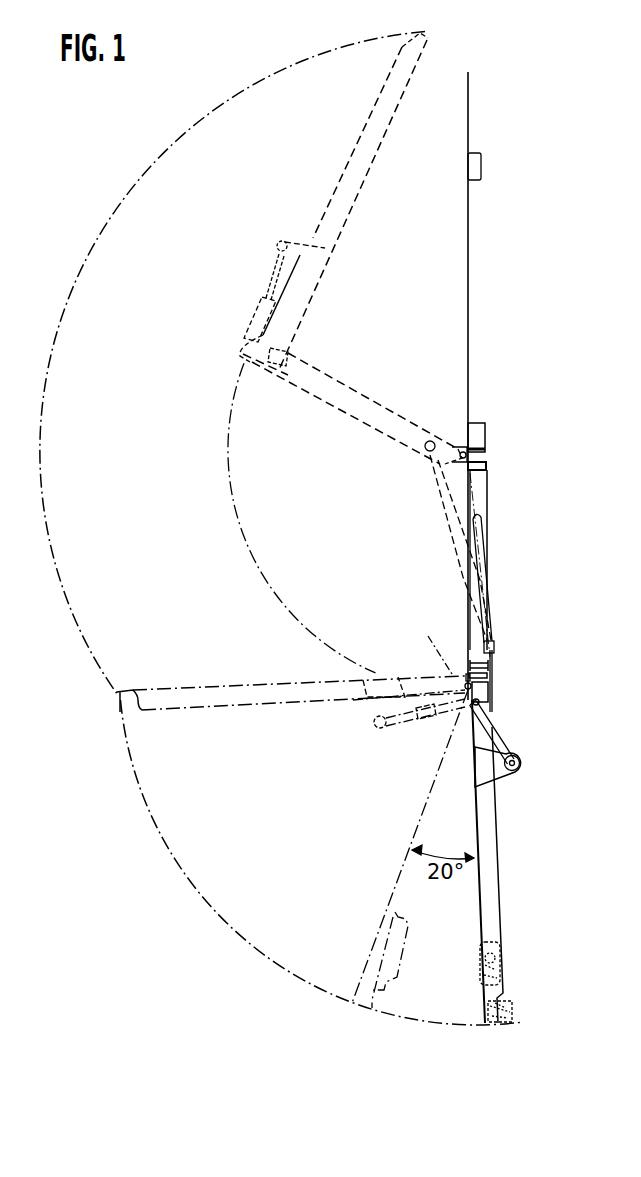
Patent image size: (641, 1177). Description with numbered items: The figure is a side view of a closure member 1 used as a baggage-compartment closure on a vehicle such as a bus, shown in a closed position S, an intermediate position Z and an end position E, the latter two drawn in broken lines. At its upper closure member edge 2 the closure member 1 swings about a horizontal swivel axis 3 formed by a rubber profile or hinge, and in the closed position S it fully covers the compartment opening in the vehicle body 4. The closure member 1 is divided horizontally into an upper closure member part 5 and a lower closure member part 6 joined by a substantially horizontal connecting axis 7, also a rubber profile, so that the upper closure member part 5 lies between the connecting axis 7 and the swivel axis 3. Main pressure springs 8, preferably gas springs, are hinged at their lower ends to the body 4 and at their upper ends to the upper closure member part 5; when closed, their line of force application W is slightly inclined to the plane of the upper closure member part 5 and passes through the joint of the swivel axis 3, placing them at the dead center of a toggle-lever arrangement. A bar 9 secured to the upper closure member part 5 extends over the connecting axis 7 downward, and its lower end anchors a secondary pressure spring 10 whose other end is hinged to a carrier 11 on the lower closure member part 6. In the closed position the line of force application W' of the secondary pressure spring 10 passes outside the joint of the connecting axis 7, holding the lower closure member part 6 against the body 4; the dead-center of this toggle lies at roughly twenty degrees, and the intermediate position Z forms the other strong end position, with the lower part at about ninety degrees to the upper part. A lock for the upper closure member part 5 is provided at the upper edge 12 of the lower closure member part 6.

The closure member 1 is at (456, 672).
The upper closure member edge 2 is at (483, 462).
The swivel axis 3 is at (462, 450).
The vehicle body 4 is at (477, 440).
The upper closure member part 5 is at (490, 532).
The lower closure member part 6 is at (489, 854).
The connecting axis 7 is at (470, 676).
The main pressure spring 8 is at (478, 577).
The bar 9 is at (478, 694).
The secondary pressure spring 10 is at (488, 738).
The carrier 11 is at (494, 765).
The upper edge of the lower closure member part 12 is at (473, 686).
The line of force application W is at (518, 386).
The line of force application W' is at (431, 642).
The end position E is at (352, 412).
The intermediate position Z is at (320, 704).
The closed position S is at (474, 913).